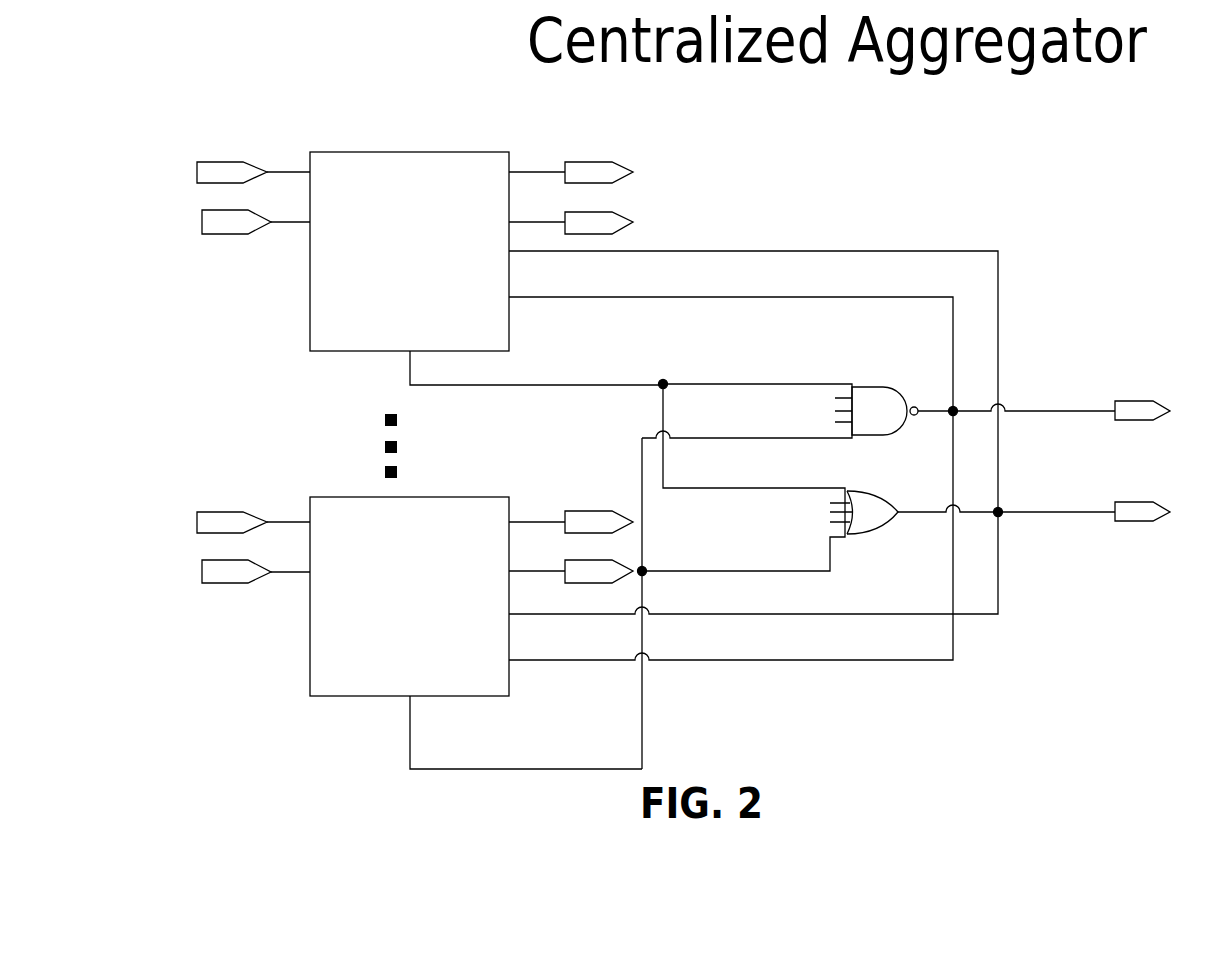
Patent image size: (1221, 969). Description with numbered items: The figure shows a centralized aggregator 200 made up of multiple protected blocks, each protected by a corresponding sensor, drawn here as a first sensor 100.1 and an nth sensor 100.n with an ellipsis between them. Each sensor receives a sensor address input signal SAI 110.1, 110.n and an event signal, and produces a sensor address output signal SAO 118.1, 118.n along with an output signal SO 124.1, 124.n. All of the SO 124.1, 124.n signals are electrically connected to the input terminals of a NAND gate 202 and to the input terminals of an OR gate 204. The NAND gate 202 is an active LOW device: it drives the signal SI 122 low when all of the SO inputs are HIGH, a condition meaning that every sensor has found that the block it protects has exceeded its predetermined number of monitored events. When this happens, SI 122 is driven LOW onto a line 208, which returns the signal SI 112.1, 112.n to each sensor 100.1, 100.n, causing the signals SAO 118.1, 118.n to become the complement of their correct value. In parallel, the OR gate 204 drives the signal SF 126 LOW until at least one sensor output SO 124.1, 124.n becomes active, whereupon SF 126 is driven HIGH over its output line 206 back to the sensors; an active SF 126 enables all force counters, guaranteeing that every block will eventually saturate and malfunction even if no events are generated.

The centralized aggregator 200 is at (1176, 163).
The sensor 100.1 is at (336, 147).
The sensor 100.n is at (336, 490).
The signal SAI 110.1 is at (193, 171).
The signal SAI 110.n is at (193, 522).
The signal SI 112.1 is at (193, 220).
The signal SI 112.n is at (193, 571).
The signal SAO 118.1 is at (622, 163).
The signal SAO 118.n is at (572, 503).
The output signal SO 124.1 is at (405, 366).
The output signal SO 124.n is at (405, 740).
The NAND gate 202 is at (874, 386).
The OR gate 204 is at (874, 538).
The signal SI 122 is at (1120, 396).
The line 208 is at (1100, 415).
The signal SF 126 is at (1135, 498).
The SF output line 206 is at (1100, 515).